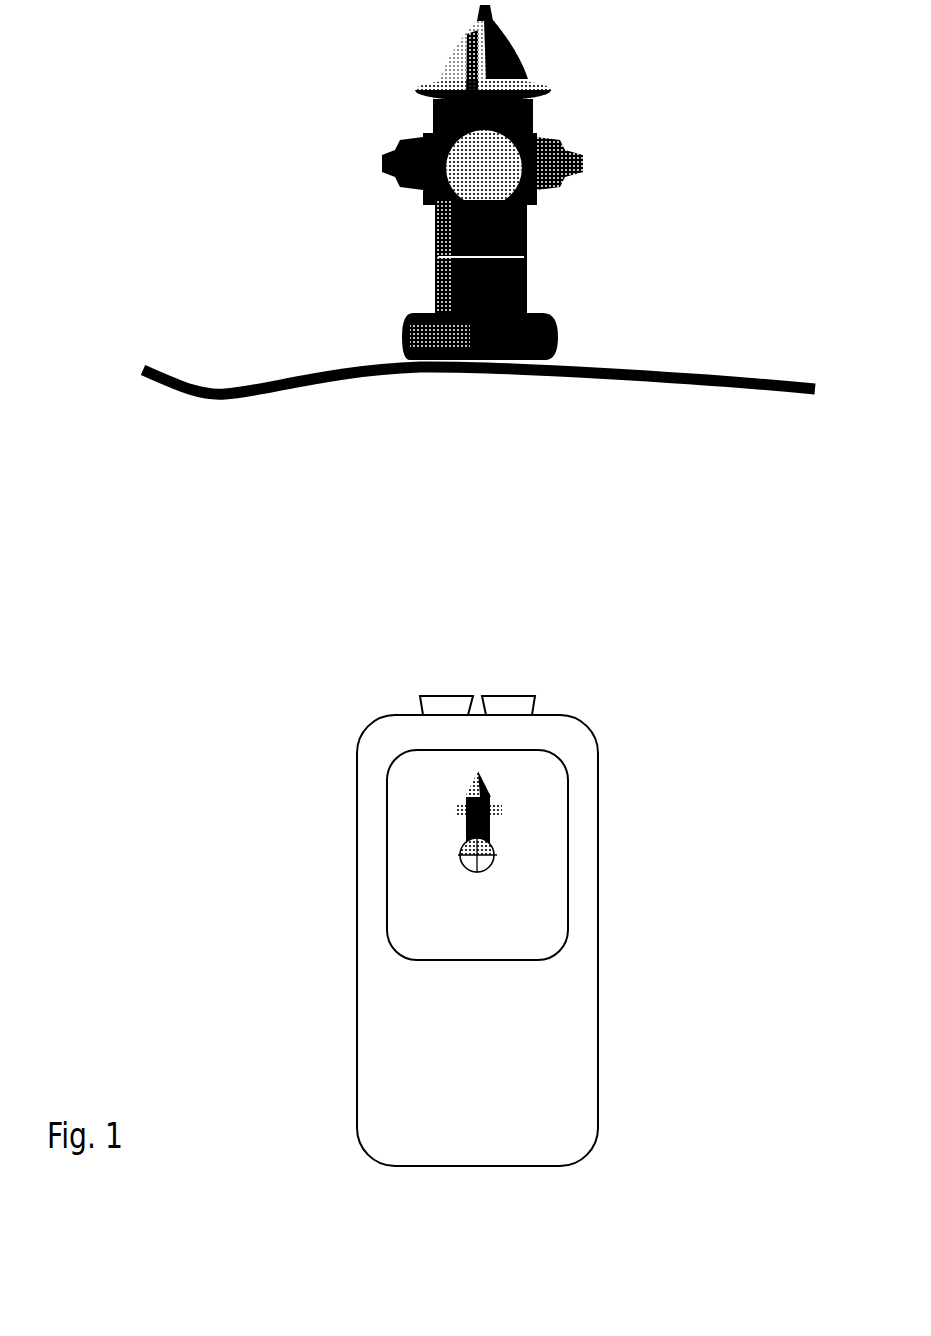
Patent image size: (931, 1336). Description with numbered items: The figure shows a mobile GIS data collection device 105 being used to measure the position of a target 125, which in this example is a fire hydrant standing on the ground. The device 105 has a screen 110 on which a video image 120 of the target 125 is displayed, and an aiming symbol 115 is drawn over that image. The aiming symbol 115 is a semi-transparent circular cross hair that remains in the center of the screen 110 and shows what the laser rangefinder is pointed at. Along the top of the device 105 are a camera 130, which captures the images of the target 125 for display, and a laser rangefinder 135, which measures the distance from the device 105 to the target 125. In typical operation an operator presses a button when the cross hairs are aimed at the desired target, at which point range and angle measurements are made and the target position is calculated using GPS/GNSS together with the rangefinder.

The mobile GIS data collection device 105 is at (500, 1078).
The screen 110 is at (570, 902).
The aiming symbol 115 is at (467, 870).
The video image 120 is at (490, 823).
The target 125 is at (528, 282).
The camera 130 is at (420, 707).
The laser rangefinder 135 is at (535, 703).